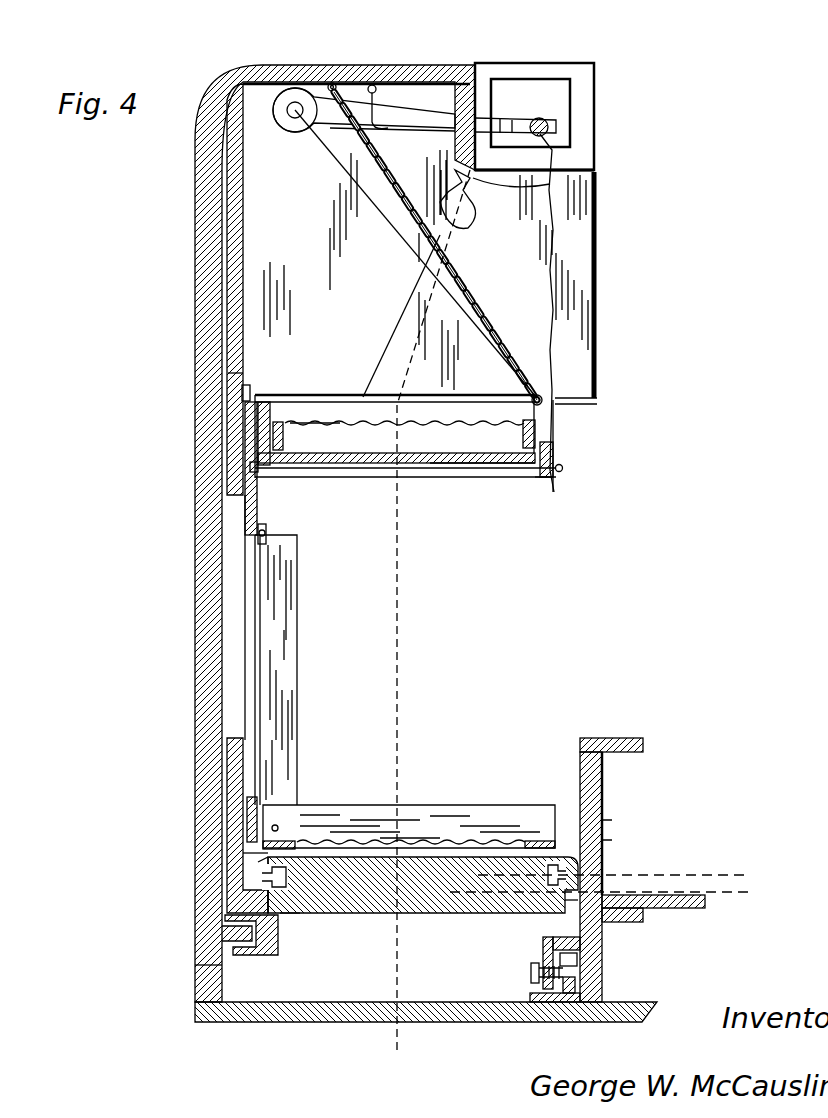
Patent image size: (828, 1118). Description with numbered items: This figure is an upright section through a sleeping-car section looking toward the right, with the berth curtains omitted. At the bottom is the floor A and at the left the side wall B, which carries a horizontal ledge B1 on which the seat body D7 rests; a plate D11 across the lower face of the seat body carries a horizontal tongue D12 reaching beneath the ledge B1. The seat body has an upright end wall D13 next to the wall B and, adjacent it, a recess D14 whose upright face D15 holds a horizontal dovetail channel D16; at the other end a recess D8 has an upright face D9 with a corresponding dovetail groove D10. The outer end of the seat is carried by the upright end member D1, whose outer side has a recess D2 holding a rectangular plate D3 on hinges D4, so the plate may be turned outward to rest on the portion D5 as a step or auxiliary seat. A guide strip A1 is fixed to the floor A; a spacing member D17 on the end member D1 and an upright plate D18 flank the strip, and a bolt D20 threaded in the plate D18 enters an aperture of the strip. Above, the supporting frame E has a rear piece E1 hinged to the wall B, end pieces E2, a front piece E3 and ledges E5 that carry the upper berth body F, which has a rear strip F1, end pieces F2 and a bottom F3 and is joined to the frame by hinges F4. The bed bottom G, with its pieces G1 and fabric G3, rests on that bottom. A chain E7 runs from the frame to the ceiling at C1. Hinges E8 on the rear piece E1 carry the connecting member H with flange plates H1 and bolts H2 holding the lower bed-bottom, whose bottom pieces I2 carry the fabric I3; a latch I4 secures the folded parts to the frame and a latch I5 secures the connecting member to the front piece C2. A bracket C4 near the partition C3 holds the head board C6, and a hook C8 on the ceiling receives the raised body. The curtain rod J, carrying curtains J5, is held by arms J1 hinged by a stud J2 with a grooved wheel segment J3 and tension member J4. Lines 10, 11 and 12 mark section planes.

The floor of the car A is at (620, 1000).
The guide strip A1 is at (566, 998).
The side wall of the car B is at (197, 568).
The horizontal ledge B1 is at (225, 921).
The ceiling attachment point of chain C1 is at (332, 83).
The front piece C2 is at (455, 84).
The partition C3 is at (361, 270).
The rectangular bracket C4 is at (580, 88).
The head board C6 is at (535, 333).
The hook C8 is at (365, 93).
The upright end member D1 is at (641, 746).
The recess D2 is at (610, 798).
The rectangular plate D3 is at (676, 894).
The hinges D4 is at (612, 880).
The bearing portion of end member D5 is at (650, 915).
The seat body D7 is at (378, 878).
The recess D8 is at (606, 832).
The upright face of recess D9 is at (572, 898).
The dovetail groove D10 is at (462, 841).
The plate D11 is at (286, 930).
The horizontal tongue D12 is at (205, 965).
The upright end wall D13 is at (236, 760).
The recess D14 is at (252, 853).
The upright face of recess D15 is at (262, 866).
The dovetail channel D16 is at (268, 883).
The spacing member D17 is at (625, 826).
The upright plate D18 is at (583, 893).
The bolt D20 is at (540, 972).
The supporting frame E is at (243, 373).
The upright rear piece E1 is at (250, 518).
The upright end pieces E2 is at (540, 420).
The upright front piece E3 is at (555, 460).
The ledge E5 is at (550, 480).
The chain E7 is at (470, 293).
The hinges E8 is at (266, 534).
The upper berth body F is at (415, 470).
The upright rear strip F1 is at (260, 416).
The end piece F2 is at (312, 408).
The bottom F3 is at (420, 466).
The hinges F4 is at (243, 388).
The bed bottom G is at (398, 437).
The front and rear pieces G1 is at (250, 469).
The horizontal fabric G3 is at (340, 427).
The connecting member H is at (255, 610).
The upright flange plate H1 is at (275, 655).
The horizontal bolts H2 is at (272, 828).
The longitudinal bottom pieces I2 is at (287, 838).
The fabric I3 is at (376, 803).
The latch I4 is at (565, 470).
The latch I5 is at (550, 184).
The curtain rod J is at (550, 127).
The arms J1 is at (505, 128).
The horizontal stud J2 is at (276, 105).
The grooved wheel segment J3 is at (289, 128).
The tension member J4 is at (334, 184).
The curtains J5 is at (556, 297).
The section line 10 is at (611, 872).
The section line 11 is at (617, 895).
The section line 12 is at (432, 347).